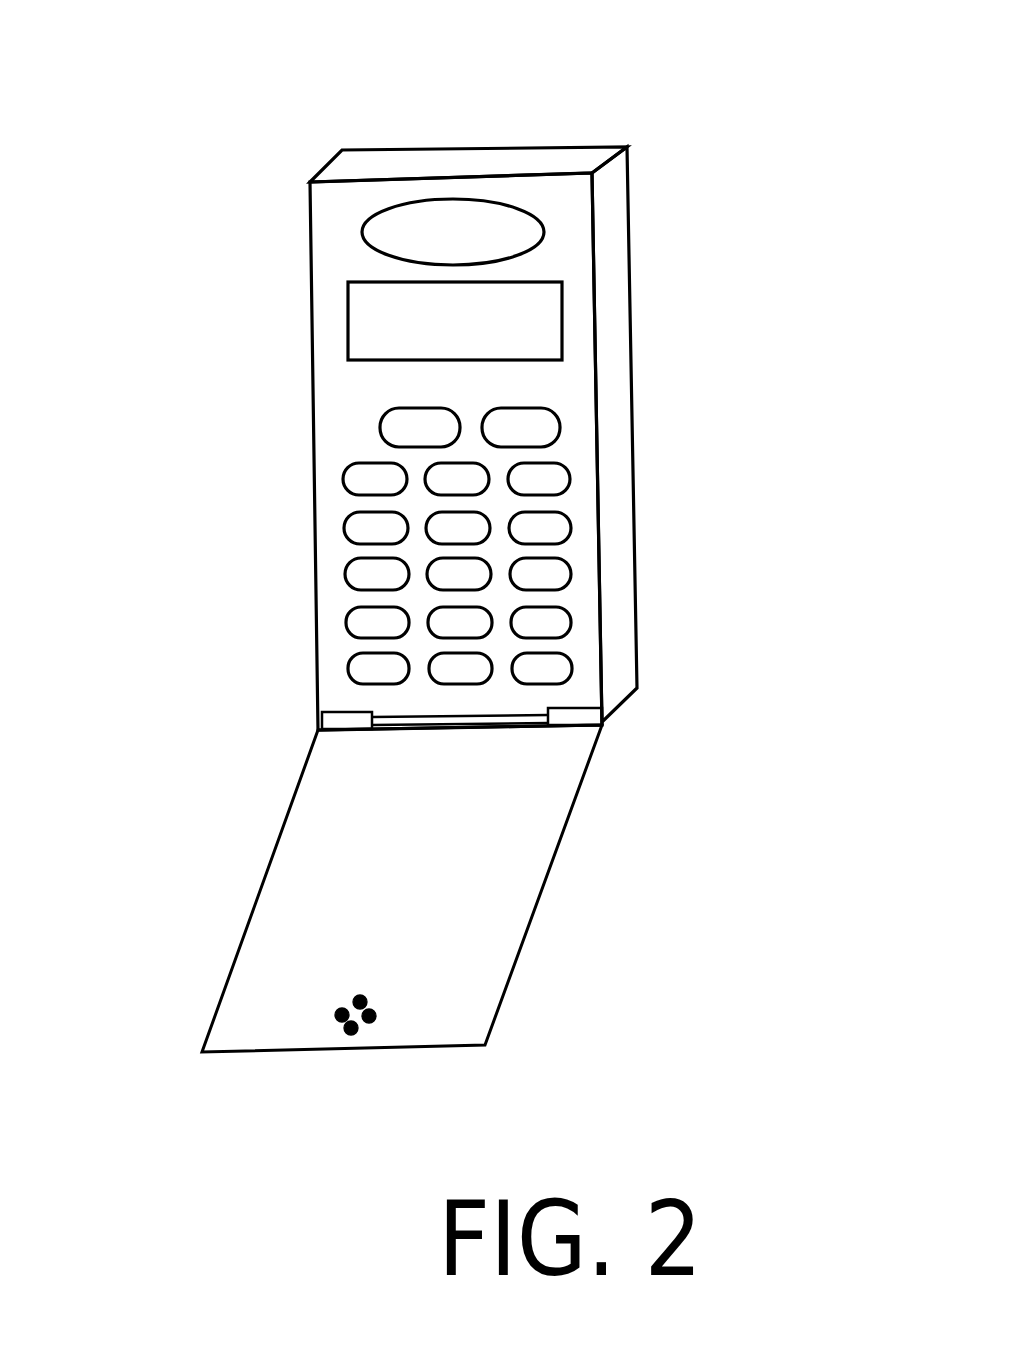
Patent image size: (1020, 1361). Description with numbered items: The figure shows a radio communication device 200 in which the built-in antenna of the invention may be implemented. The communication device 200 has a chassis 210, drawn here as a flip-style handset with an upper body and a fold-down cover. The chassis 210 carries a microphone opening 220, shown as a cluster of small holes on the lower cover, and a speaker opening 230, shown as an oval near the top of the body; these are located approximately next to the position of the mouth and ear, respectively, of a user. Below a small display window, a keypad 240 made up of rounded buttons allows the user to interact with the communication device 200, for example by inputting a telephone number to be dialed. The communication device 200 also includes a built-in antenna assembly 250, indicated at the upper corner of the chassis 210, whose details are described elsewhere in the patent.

The radio communication device 200 is at (255, 230).
The chassis 210 is at (662, 348).
The microphone opening 220 is at (300, 1011).
The speaker opening 230 is at (466, 208).
The keypad 240 is at (600, 571).
The built-in antenna assembly 250 is at (593, 127).